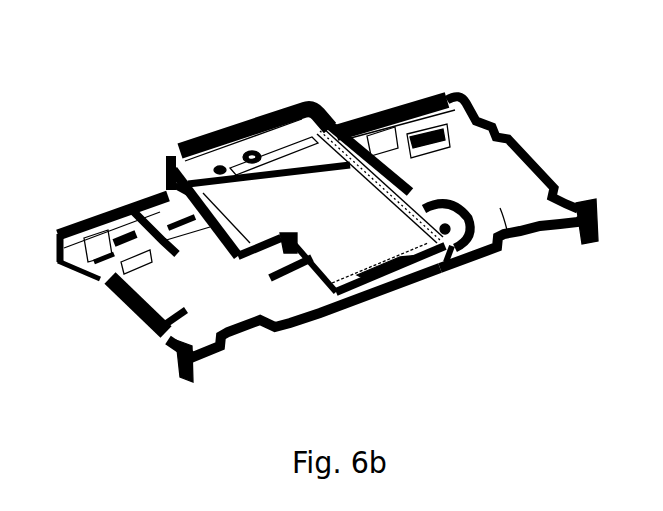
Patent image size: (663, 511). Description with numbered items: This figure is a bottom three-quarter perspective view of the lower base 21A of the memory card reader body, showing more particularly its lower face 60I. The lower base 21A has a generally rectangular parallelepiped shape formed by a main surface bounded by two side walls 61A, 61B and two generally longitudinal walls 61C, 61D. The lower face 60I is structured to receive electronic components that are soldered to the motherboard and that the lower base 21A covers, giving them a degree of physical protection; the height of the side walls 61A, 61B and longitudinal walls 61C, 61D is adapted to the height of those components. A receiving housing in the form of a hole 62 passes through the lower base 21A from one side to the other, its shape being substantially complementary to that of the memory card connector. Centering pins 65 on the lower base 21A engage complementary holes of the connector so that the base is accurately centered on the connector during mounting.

The lower base 21A is at (506, 88).
The lower face 60I is at (520, 242).
The side wall 61A is at (112, 307).
The side wall 61B is at (552, 167).
The longitudinal wall 61C is at (317, 317).
The longitudinal wall 61D is at (249, 121).
The hole 62 is at (315, 185).
The centering pin 65 is at (180, 142).